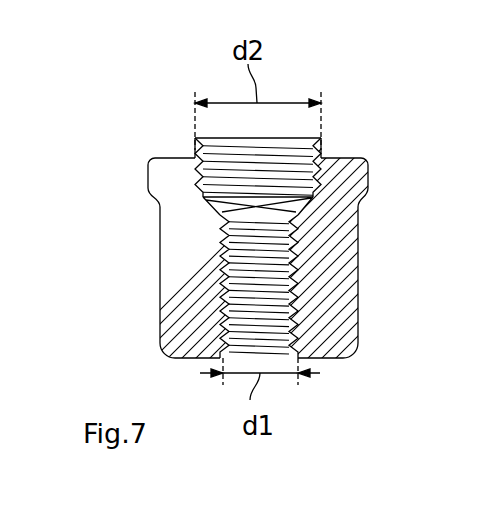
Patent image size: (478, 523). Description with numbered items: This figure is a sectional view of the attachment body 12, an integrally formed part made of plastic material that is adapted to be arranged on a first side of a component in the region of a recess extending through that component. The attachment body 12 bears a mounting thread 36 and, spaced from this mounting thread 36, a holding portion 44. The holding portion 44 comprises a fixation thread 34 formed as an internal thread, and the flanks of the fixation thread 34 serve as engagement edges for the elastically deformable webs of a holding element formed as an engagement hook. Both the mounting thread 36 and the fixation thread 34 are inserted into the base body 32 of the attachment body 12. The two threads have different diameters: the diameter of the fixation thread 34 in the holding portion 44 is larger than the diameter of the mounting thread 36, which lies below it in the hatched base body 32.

The attachment body 12 is at (360, 123).
The base body 32 is at (348, 282).
The fixation thread 34 is at (283, 172).
The mounting thread 36 is at (222, 293).
The holding portion 44 is at (173, 173).